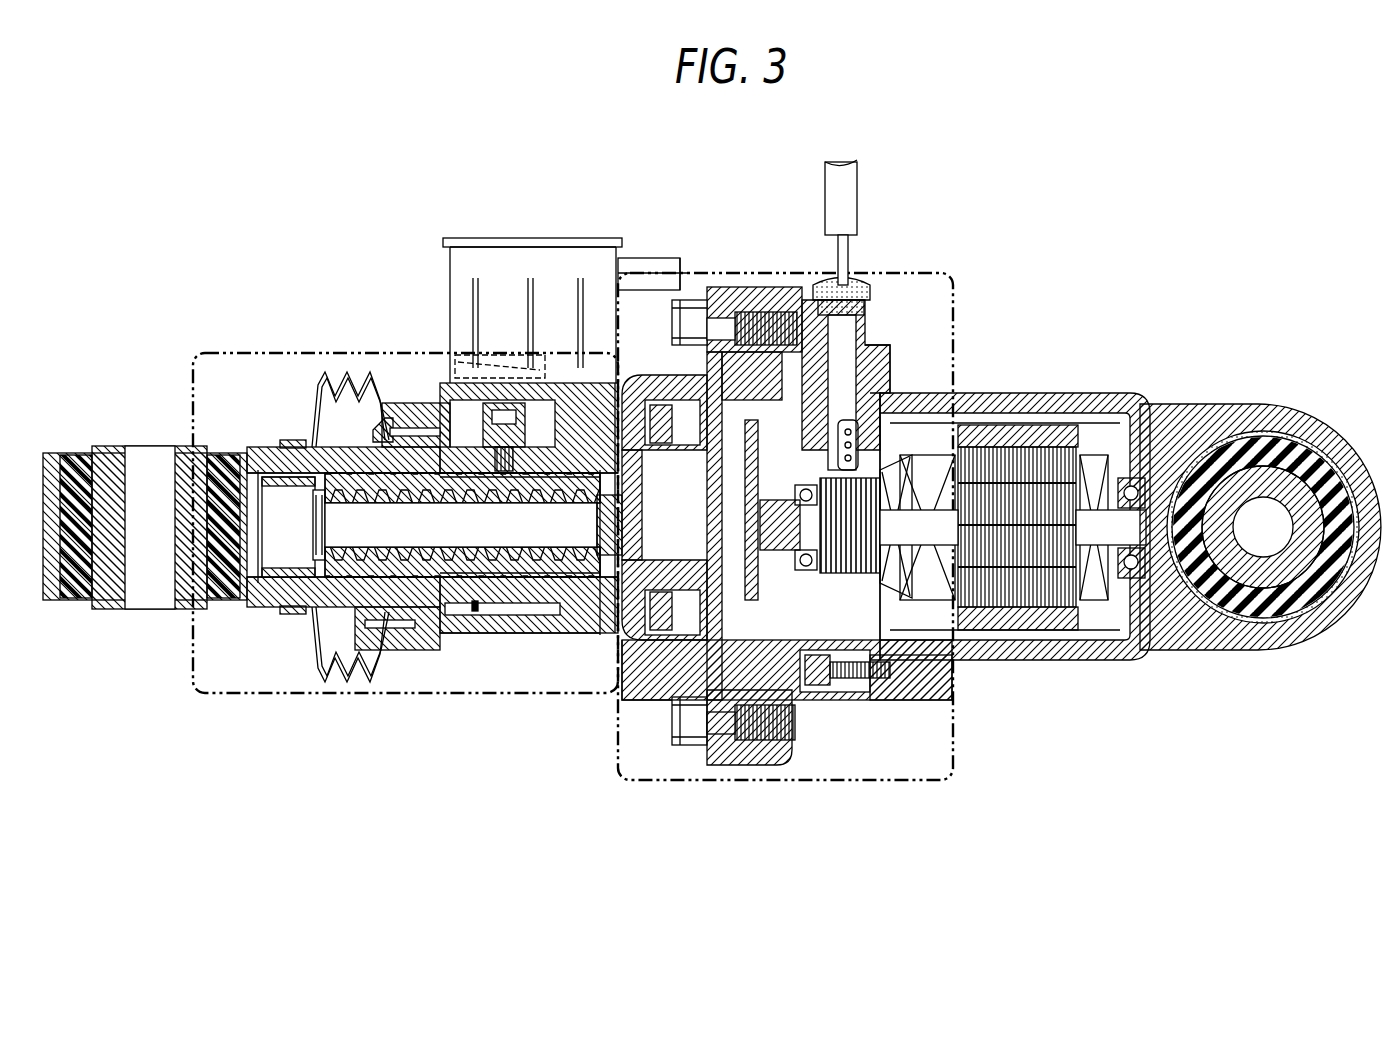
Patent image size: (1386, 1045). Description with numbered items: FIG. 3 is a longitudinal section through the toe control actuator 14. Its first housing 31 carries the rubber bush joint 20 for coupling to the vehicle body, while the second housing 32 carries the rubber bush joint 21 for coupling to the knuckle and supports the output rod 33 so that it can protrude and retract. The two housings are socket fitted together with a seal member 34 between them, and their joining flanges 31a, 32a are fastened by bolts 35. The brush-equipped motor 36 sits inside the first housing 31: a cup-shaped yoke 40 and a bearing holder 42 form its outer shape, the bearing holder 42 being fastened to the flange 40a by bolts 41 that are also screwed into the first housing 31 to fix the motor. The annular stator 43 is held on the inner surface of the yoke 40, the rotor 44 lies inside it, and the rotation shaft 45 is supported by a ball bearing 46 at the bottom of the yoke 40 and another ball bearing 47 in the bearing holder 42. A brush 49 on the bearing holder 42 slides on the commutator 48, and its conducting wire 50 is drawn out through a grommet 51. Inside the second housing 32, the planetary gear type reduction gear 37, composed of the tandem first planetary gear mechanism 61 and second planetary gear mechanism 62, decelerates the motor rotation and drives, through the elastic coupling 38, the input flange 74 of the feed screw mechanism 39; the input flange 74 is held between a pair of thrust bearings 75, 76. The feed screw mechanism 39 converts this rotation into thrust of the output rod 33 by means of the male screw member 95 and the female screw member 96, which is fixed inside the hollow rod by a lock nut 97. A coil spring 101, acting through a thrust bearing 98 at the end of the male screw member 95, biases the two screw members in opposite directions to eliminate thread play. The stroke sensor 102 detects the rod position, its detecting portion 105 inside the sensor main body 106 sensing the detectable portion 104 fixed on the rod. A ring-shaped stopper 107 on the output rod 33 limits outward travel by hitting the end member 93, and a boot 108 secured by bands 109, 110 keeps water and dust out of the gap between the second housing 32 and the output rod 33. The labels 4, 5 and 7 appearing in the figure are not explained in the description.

The electric actuator 4 is at (955, 275).
The feed screw mechanism 5 is at (380, 352).
The section line 7 is at (690, 328).
The toe control actuator 14 is at (657, 219).
The rubber bush joint 20 is at (1275, 431).
The rubber bush joint 21 is at (108, 446).
The first housing 31 is at (1096, 392).
The joining flange 31a is at (780, 296).
The second housing 32 is at (560, 655).
The joining flange 32a is at (735, 287).
The output rod 33 is at (334, 613).
The seal member 34 is at (740, 752).
The bolts 35 is at (690, 298).
The brush-equipped motor 36 is at (1043, 398).
The planetary gear type reduction gear 37 is at (790, 682).
The elastic coupling 38 is at (612, 636).
The feed screw mechanism 39 is at (448, 640).
The yoke 40 is at (1103, 660).
The flange 40a is at (882, 390).
The bolts 41 is at (868, 692).
The bearing holder 42 is at (862, 372).
The annular stator 43 is at (1000, 425).
The rotor 44 is at (1040, 632).
The rotation shaft 45 is at (822, 525).
The ball bearing 46 is at (1158, 598).
The ball bearing 47 is at (802, 484).
The commutator 48 is at (904, 541).
The brush 49 is at (880, 448).
The conducting wire 50 is at (845, 250).
The grommet 51 is at (860, 286).
The first planetary gear mechanism 61 is at (784, 676).
The second planetary gear mechanism 62 is at (730, 462).
The input flange 74 is at (610, 525).
The thrust bearing 75 is at (632, 692).
The thrust bearing 76 is at (695, 665).
The end member 93 is at (372, 424).
The male screw member 95 is at (452, 498).
The female screw member 96 is at (503, 525).
The lock nut 97 is at (552, 615).
The thrust bearing 98 is at (330, 500).
The coil spring 101 is at (297, 492).
The stroke sensor 102 is at (547, 233).
The detectable portion 104 is at (538, 362).
The detecting portion 105 is at (497, 360).
The sensor main body 106 is at (493, 278).
The stopper 107 is at (478, 612).
The boot 108 is at (336, 372).
The band 109 is at (393, 403).
The band 110 is at (296, 440).